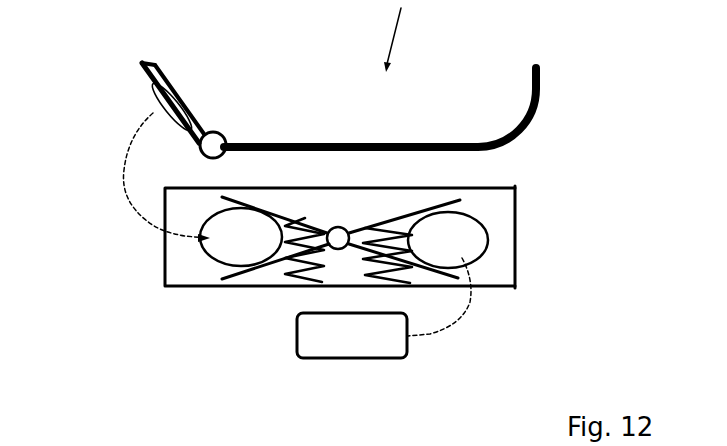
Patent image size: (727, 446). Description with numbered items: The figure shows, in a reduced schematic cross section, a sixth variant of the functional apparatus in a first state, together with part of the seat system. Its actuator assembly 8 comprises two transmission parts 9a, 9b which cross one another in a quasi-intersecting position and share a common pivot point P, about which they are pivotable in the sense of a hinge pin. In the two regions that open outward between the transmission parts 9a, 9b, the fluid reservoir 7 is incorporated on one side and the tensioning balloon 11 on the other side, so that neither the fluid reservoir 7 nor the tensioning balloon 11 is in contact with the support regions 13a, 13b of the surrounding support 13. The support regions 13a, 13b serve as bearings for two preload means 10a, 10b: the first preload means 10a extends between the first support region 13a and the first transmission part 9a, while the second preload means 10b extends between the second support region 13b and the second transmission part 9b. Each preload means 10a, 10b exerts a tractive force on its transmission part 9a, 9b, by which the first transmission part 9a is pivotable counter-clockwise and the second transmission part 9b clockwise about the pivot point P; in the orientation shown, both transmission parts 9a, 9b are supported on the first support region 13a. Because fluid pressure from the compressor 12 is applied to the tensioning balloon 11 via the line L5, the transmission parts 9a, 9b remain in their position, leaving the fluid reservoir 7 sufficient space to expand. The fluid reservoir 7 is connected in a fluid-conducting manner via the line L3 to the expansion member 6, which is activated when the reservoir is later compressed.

The expansion member 6 is at (198, 115).
The fluid reservoir 7 is at (223, 247).
The actuator assembly 8 is at (546, 275).
The first transmission part 9a is at (283, 218).
The second transmission part 9b is at (352, 257).
The first preload means 10a is at (310, 295).
The second preload means 10b is at (398, 230).
The tensioning balloon 11 is at (486, 240).
The compressor 12 is at (367, 348).
The support region 13 is at (505, 187).
The first support region 13a is at (288, 275).
The second support region 13b is at (272, 180).
The pivot point P is at (332, 227).
The line L3 is at (126, 193).
The line L5 is at (468, 318).